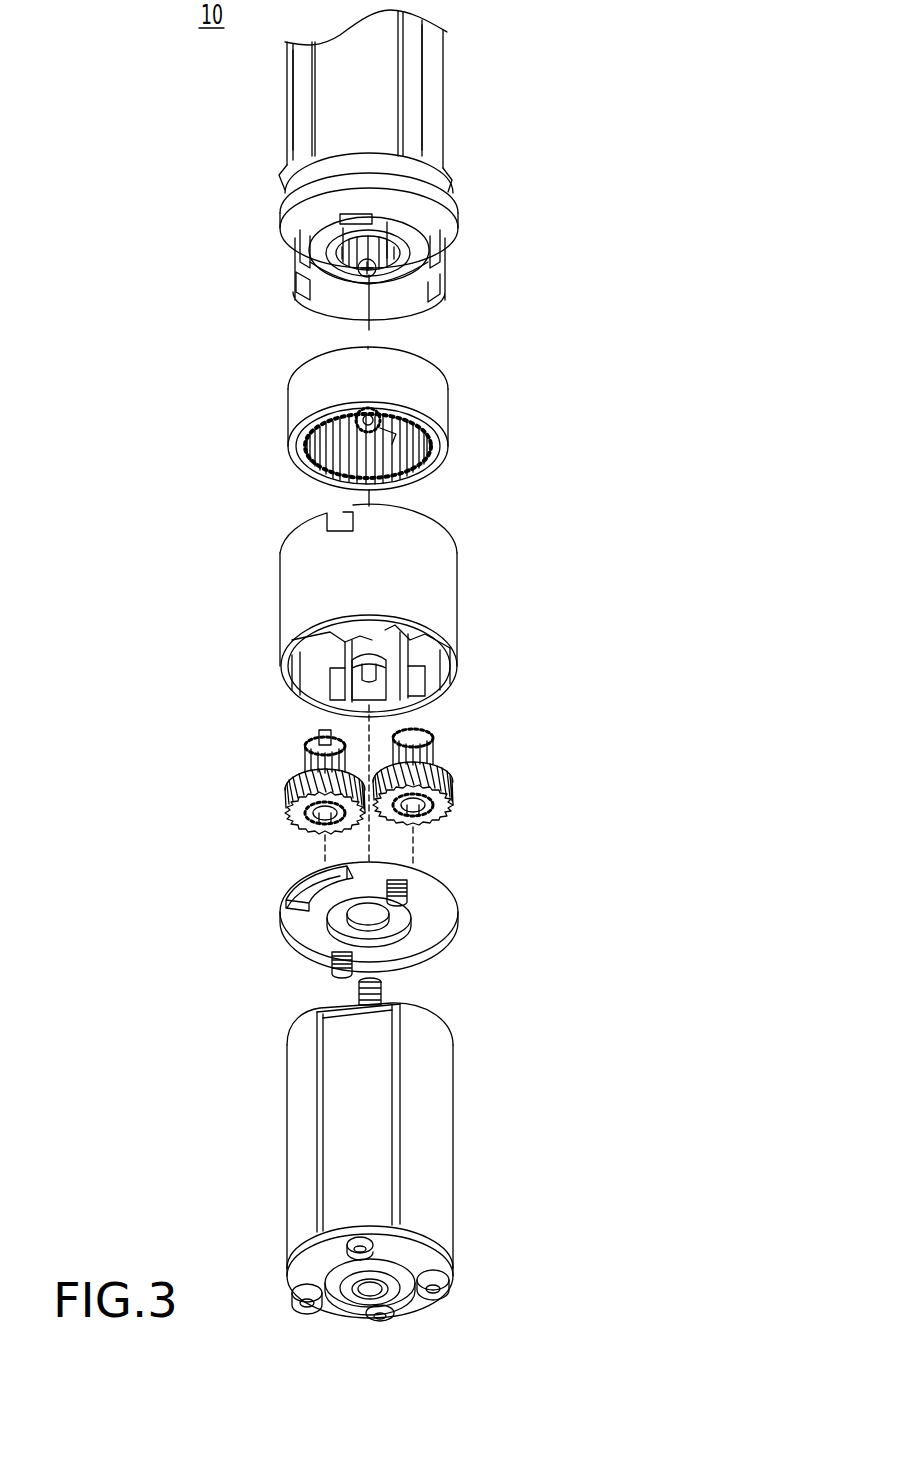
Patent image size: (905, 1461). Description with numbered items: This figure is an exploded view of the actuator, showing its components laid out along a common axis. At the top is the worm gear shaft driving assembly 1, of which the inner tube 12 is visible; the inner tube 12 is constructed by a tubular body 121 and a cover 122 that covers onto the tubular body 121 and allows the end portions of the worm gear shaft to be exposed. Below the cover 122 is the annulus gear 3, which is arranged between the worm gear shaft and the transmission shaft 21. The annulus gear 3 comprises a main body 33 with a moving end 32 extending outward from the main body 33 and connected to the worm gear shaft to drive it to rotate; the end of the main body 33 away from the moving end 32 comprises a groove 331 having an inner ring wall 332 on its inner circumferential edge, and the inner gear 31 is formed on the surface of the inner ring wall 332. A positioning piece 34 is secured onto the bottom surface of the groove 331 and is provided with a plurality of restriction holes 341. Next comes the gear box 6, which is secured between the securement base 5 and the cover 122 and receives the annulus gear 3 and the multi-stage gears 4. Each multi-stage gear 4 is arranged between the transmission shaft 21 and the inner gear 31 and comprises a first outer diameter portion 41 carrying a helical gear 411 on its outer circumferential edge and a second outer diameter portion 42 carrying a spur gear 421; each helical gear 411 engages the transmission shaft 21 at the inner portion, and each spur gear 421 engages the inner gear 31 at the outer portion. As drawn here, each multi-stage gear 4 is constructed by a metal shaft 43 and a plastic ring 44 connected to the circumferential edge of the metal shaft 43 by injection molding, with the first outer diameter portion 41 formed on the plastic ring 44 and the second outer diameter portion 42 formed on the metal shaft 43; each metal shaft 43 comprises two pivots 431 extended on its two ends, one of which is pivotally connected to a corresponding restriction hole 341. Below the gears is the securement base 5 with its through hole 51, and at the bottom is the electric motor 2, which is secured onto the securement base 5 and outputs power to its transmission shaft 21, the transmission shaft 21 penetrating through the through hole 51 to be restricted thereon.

The worm gear shaft driving assembly 1 is at (286, 118).
The inner tube 12 is at (556, 112).
The tubular body 121 is at (432, 72).
The cover 122 is at (437, 200).
The annulus gear 3 is at (389, 425).
The inner gear 31 is at (352, 468).
The moving end 32 is at (368, 348).
The main body 33 is at (428, 382).
The positioning piece 34 is at (343, 426).
The groove 331 is at (398, 463).
The inner ring wall 332 is at (357, 474).
The restriction hole 341 is at (393, 432).
The gear box 6 is at (441, 586).
The multi-stage gear 4 is at (541, 704).
The first outer diameter portion 41 is at (442, 769).
The second outer diameter portion 42 is at (437, 750).
The metal shaft 43 is at (313, 742).
The plastic ring 44 is at (457, 798).
The helical gear 411 is at (288, 785).
The spur gear 421 is at (303, 755).
The pivot 431 is at (430, 810).
The securement base 5 is at (408, 934).
The through hole 51 is at (375, 912).
The transmission shaft 21 is at (357, 990).
The electric motor 2 is at (399, 1144).